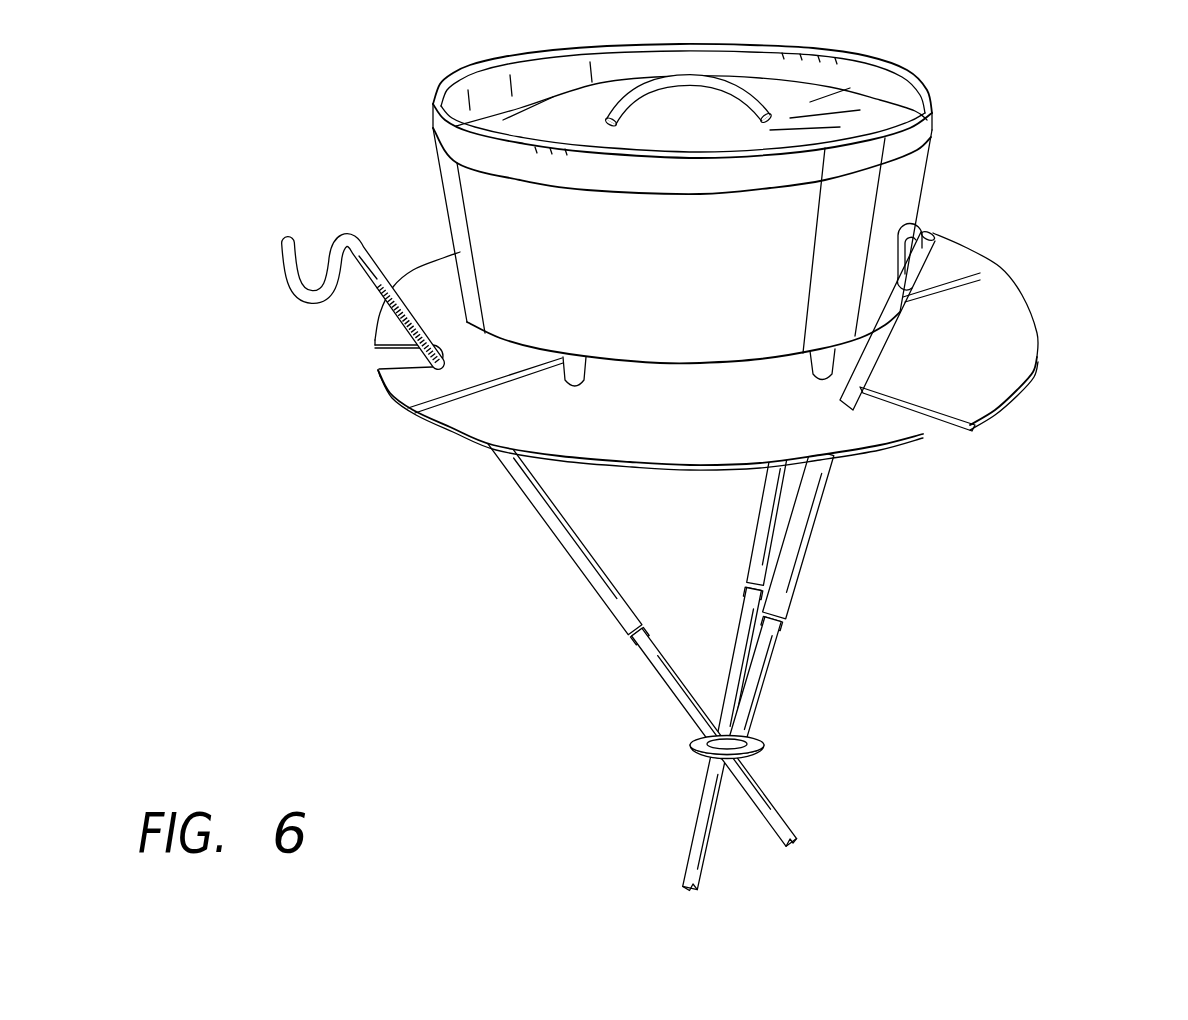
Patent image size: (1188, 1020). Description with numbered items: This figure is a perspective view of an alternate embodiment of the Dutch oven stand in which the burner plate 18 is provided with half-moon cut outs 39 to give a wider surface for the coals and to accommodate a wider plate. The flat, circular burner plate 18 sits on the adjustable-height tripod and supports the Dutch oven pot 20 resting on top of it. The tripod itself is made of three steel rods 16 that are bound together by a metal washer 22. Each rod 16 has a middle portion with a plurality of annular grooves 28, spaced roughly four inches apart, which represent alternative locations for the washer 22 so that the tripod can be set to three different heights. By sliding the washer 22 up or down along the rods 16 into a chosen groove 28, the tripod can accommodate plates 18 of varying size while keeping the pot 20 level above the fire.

The steel rod 16 is at (803, 543).
The burner plate 18 is at (1000, 360).
The Dutch oven pot 20 is at (908, 205).
The metal washer 22 is at (767, 740).
The annular groove 28 is at (630, 637).
The half-moon cut out 39 is at (937, 413).